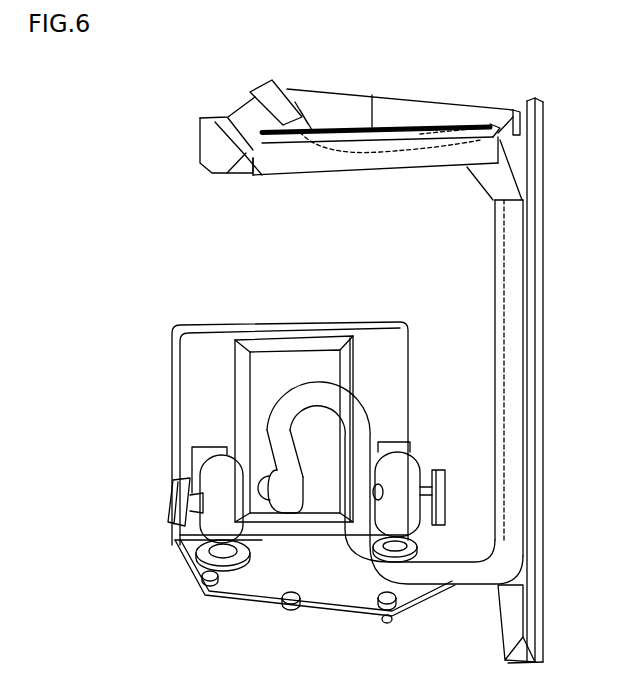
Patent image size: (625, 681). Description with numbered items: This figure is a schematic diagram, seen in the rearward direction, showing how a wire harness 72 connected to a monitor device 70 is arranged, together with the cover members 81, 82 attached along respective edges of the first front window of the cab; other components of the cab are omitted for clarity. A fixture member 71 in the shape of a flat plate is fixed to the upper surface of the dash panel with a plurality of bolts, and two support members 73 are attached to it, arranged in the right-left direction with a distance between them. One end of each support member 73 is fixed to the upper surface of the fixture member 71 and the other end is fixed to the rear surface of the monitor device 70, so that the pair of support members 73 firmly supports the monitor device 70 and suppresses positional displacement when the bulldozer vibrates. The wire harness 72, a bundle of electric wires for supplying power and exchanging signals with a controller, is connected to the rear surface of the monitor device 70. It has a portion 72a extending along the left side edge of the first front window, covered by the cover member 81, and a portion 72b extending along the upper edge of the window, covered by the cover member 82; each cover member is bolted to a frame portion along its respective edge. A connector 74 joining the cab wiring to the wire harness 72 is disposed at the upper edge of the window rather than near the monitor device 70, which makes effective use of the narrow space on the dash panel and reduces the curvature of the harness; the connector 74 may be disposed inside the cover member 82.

The monitor device 70 is at (205, 412).
The fixture member 71 is at (262, 592).
The wire harness 72 is at (352, 412).
The wire harness portion extending along the left side edge 72a is at (513, 350).
The wire harness portion extending along the upper edge 72b is at (358, 140).
The support member 73 is at (215, 478).
The connector 74 is at (279, 104).
The cover member 81 is at (530, 280).
The cover member 82 is at (407, 153).